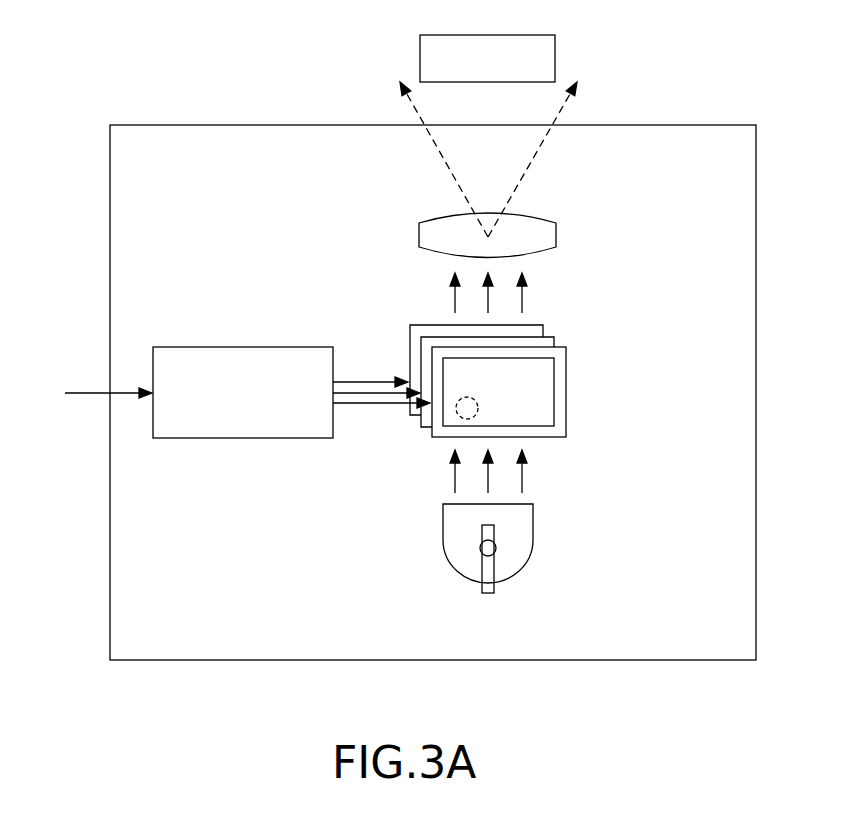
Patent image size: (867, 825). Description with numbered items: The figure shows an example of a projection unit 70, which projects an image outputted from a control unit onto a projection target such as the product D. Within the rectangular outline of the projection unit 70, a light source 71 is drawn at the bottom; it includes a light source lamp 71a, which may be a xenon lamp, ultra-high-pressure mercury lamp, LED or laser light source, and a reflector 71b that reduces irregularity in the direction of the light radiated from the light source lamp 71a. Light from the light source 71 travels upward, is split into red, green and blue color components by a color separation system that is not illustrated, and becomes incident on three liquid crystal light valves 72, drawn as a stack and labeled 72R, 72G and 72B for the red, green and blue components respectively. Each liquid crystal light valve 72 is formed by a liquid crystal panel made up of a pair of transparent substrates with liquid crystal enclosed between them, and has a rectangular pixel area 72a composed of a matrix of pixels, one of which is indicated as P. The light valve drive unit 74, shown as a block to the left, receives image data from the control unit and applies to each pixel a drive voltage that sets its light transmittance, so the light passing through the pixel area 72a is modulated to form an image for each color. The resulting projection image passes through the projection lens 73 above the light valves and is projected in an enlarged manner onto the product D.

The projection unit 70 is at (688, 125).
The product D is at (505, 35).
The projection lens 73 is at (553, 235).
The liquid crystal light valve 72 is at (561, 361).
The liquid crystal light valve for blue 72B is at (545, 328).
The liquid crystal light valve for green 72G is at (552, 340).
The liquid crystal light valve for red 72R is at (563, 357).
The pixel area 72a is at (547, 400).
The pixel P is at (458, 418).
The light valve drive unit 74 is at (283, 347).
The light source 71 is at (494, 548).
The light source lamp 71a is at (497, 545).
The reflector 71b is at (458, 568).